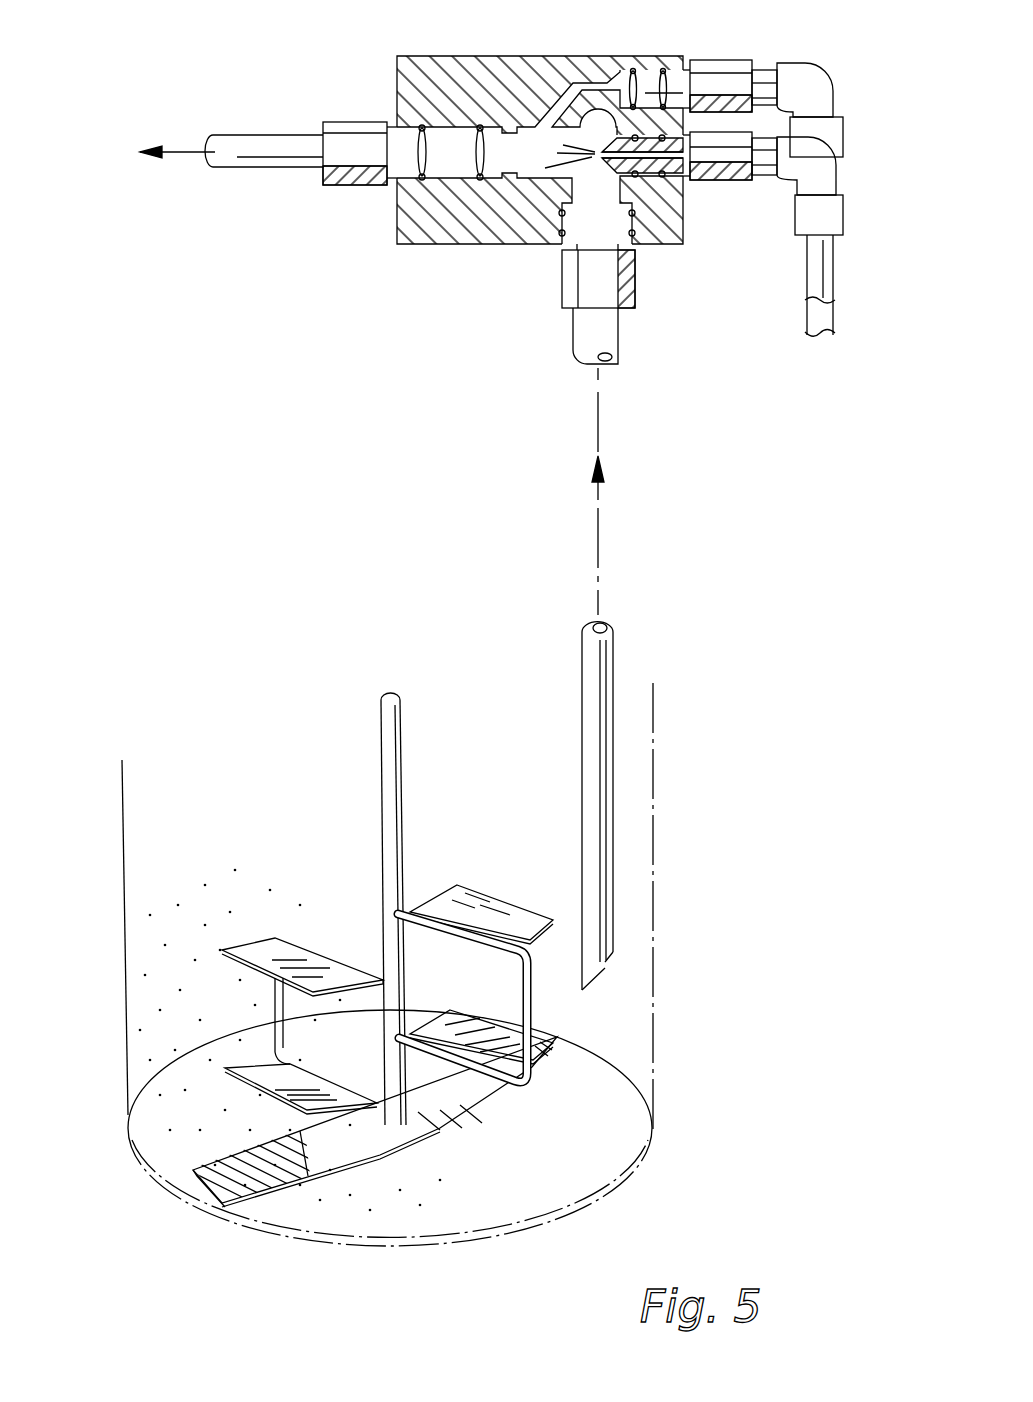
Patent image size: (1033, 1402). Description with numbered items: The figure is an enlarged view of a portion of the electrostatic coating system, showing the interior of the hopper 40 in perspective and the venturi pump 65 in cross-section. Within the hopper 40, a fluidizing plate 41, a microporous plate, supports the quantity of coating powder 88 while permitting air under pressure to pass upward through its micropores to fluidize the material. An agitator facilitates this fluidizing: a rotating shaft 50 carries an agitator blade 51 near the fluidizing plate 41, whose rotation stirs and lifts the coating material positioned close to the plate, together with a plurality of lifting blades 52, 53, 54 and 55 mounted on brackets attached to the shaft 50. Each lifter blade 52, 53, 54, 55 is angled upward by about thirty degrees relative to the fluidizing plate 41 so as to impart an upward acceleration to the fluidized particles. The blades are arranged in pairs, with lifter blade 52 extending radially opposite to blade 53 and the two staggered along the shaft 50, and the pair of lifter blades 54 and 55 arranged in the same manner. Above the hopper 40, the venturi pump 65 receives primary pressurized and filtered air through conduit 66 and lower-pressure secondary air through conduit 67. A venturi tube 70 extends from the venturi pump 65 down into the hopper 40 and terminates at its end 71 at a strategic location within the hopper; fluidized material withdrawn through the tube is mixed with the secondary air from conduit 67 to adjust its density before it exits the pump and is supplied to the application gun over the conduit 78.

The venturi pump 65 is at (557, 63).
The conduit 78 is at (257, 150).
The conduit 67 is at (822, 97).
The conduit 66 is at (823, 278).
The venturi tube 70 is at (608, 667).
The end of venturi tube 71 is at (603, 977).
The hopper 40 is at (653, 850).
The fluidizing plate 41 is at (620, 1157).
The powder 88 is at (150, 1047).
The rotating shaft 50 is at (398, 802).
The agitator blade 51 is at (462, 1100).
The lifting blade 52 is at (478, 922).
The lifting blade 53 is at (252, 948).
The lifting blade 54 is at (460, 1027).
The lifting blade 55 is at (325, 1078).